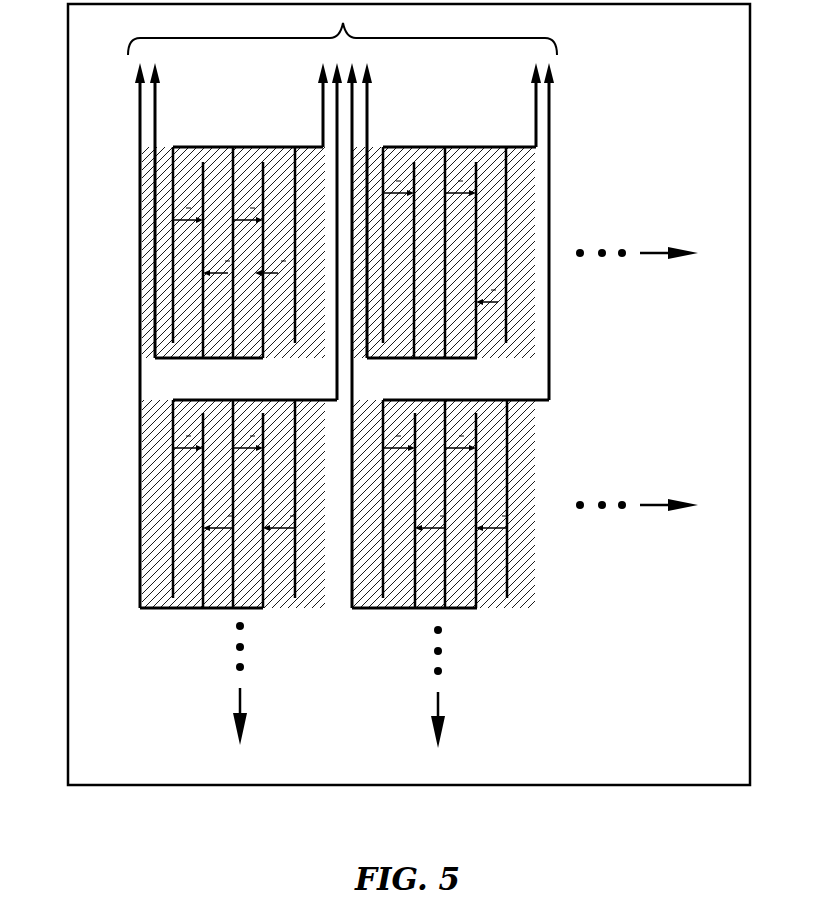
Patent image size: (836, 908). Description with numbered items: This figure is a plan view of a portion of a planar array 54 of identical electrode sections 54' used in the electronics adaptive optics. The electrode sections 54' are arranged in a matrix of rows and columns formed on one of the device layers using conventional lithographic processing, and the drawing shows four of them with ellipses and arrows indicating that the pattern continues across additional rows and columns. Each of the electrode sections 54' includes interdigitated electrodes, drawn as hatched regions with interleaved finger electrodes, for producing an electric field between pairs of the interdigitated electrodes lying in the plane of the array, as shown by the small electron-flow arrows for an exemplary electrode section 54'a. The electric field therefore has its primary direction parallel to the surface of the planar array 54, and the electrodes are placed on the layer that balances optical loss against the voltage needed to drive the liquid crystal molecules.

The planar array 54 is at (384, 394).
The electrode sections 54' is at (324, 236).
The electrode section 54'a is at (172, 236).